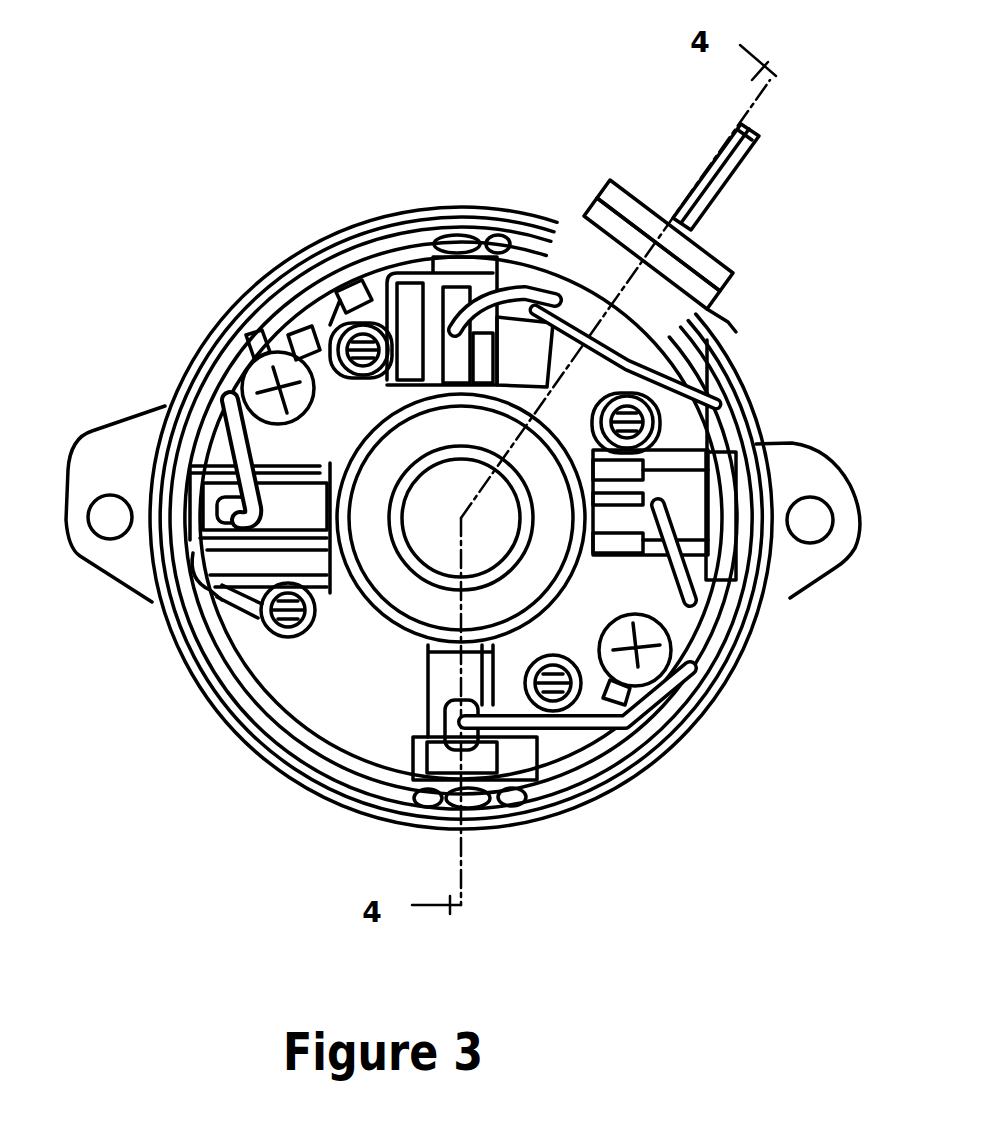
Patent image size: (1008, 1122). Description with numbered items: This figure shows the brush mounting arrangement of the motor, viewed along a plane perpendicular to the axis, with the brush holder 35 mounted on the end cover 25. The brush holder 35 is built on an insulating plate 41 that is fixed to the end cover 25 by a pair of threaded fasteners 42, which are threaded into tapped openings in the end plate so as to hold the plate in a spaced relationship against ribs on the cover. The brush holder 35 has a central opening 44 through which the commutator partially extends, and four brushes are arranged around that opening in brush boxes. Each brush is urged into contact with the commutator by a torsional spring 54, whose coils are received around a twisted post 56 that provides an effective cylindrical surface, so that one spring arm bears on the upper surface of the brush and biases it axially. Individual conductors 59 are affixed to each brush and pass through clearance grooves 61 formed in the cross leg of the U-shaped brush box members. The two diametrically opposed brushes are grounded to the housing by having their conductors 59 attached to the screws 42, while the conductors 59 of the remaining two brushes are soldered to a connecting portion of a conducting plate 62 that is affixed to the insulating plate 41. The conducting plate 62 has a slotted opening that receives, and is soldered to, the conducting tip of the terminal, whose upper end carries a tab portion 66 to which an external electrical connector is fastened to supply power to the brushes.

The end cover 25 is at (183, 670).
The brush holder 35 is at (228, 726).
The insulating plate 41 is at (255, 742).
The threaded fasteners 42 is at (238, 385).
The central opening 44 is at (418, 667).
The torsional spring 54 is at (338, 290).
The post 56 is at (338, 330).
The conductors 59 is at (195, 457).
The clearance grooves 61 is at (705, 458).
The conducting plate 62 is at (730, 250).
The tab portion 66 is at (760, 138).